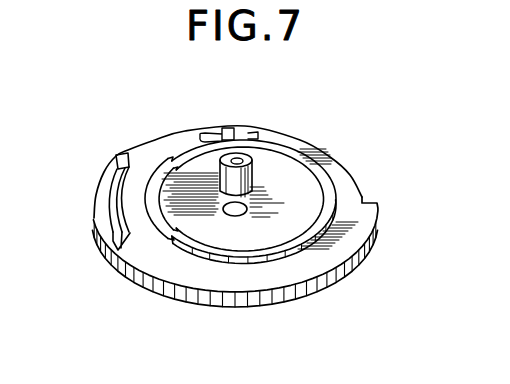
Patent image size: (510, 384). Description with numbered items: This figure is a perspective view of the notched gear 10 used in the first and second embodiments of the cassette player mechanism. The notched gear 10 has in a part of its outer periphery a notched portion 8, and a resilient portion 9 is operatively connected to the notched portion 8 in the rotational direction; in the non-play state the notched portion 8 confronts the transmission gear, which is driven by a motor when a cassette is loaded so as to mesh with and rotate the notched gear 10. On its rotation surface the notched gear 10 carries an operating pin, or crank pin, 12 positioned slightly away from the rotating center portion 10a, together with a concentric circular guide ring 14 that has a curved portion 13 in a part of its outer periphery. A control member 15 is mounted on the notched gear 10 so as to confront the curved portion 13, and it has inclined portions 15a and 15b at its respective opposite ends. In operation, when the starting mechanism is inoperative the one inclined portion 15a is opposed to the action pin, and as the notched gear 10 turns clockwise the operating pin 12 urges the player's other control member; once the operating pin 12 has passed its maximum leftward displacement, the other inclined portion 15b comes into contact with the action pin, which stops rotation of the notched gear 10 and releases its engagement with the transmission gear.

The notched portion 8 is at (352, 174).
The resilient portion 9 is at (232, 128).
The notched gear 10 is at (375, 236).
The rotating center portion 10a is at (310, 201).
The operating pin 12 is at (253, 172).
The curved portion 13 is at (158, 163).
The guide ring 14 is at (248, 266).
The control member 15 is at (86, 220).
The inclined portion 15a is at (128, 250).
The inclined portion 15b is at (122, 156).